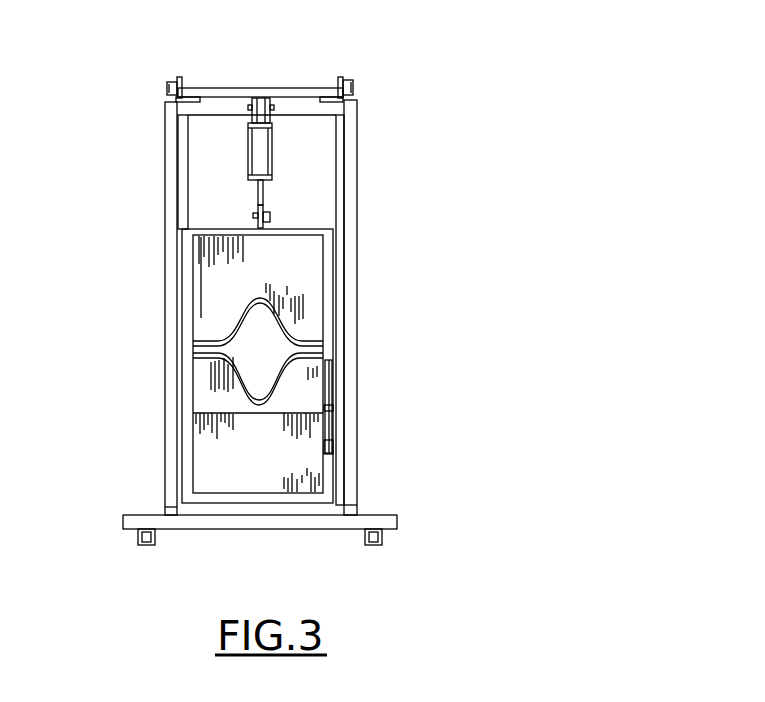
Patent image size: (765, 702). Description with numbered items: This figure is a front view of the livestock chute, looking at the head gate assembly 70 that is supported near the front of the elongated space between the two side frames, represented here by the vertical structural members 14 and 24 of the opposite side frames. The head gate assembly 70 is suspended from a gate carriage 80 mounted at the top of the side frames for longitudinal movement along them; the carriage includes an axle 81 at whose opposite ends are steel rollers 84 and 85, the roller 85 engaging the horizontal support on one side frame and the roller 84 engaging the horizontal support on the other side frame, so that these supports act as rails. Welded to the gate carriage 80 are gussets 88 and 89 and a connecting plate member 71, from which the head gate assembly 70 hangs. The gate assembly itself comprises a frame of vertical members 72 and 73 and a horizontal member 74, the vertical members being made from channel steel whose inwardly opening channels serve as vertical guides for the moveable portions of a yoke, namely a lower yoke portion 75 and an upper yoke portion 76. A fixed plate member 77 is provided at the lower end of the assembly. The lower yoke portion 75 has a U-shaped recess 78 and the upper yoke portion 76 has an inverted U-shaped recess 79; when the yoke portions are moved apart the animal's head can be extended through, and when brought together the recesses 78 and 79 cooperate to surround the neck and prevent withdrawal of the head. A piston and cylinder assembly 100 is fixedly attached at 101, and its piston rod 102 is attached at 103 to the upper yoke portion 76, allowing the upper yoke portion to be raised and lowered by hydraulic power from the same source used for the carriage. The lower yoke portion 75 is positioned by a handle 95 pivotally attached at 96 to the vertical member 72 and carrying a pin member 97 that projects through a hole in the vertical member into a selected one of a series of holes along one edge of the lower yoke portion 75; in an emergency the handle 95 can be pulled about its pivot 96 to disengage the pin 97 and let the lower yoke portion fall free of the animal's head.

The vertical structural member 14 is at (350, 190).
The vertical structural member 24 is at (170, 163).
The head gate assembly 70 is at (282, 355).
The connecting plate member 71 is at (227, 207).
The vertical member 72 is at (330, 276).
The vertical member 73 is at (190, 440).
The horizontal member 74 is at (282, 492).
The lower yoke portion 75 is at (308, 380).
The upper yoke portion 76 is at (210, 266).
The fixed plate member 77 is at (290, 465).
The U-shaped recess 78 is at (257, 383).
The inverted U-shaped recess 79 is at (255, 320).
The gate carriage 80 is at (269, 114).
The axle 81 is at (210, 90).
The roller 84 is at (167, 87).
The roller 85 is at (354, 92).
The gusset 88 is at (338, 128).
The gusset 89 is at (187, 132).
The handle 95 is at (328, 382).
The pivot 96 is at (329, 447).
The pin member 97 is at (328, 409).
The piston and cylinder assembly 100 is at (258, 150).
The fixed attachment 101 is at (261, 100).
The piston rod 102 is at (257, 192).
The attachment 103 is at (272, 216).